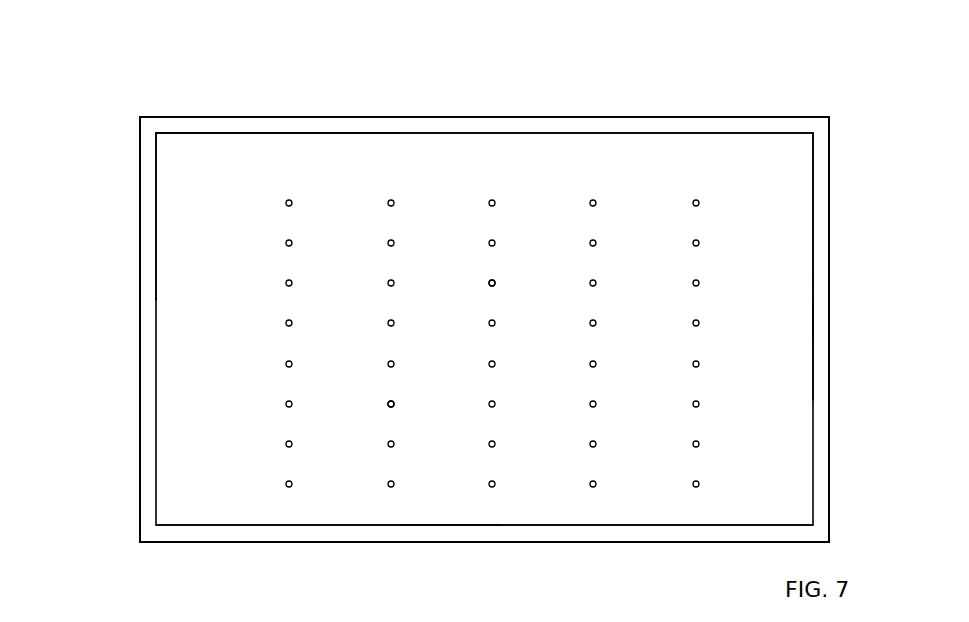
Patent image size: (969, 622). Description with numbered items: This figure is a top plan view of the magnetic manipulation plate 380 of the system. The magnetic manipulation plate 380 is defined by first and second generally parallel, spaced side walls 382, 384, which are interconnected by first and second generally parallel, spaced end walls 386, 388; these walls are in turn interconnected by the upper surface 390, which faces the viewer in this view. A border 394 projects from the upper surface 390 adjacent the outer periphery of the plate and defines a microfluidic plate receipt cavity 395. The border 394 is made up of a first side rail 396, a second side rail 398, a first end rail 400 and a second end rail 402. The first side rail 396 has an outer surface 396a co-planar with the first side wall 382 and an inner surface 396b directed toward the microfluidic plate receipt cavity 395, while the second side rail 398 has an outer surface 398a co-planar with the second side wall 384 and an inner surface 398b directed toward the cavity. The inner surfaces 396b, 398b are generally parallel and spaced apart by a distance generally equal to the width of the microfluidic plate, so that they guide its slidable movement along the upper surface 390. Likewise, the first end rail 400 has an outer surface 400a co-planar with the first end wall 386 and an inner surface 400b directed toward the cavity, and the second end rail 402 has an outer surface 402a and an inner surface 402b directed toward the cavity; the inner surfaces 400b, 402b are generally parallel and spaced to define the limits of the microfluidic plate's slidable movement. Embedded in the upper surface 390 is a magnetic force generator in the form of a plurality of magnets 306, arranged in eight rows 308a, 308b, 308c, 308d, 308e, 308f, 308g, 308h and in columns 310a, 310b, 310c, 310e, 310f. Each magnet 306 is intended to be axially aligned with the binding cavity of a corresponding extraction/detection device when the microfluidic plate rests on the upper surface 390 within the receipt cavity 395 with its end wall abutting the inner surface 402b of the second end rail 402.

The magnet 306 is at (494, 281).
The row of magnets 308a is at (274, 203).
The row of magnets 308b is at (274, 243).
The row of magnets 308c is at (274, 283).
The row of magnets 308d is at (274, 323).
The row of magnets 308e is at (274, 364).
The row of magnets 308f is at (274, 404).
The row of magnets 308g is at (274, 444).
The row of magnets 308h is at (274, 484).
The column of magnets 310a is at (290, 182).
The column of magnets 310b is at (391, 184).
The column of magnets 310c is at (492, 182).
The column of magnets 310e is at (593, 182).
The sixth column of apertures 310f is at (697, 182).
The magnetic manipulation plate 380 is at (125, 188).
The first side wall 382 is at (387, 117).
The second side wall 384 is at (450, 543).
The first end wall 386 is at (140, 318).
The second end wall 388 is at (830, 277).
The upper surface 390 is at (775, 252).
The border 394 is at (146, 396).
The microfluidic plate receipt cavity 395 is at (792, 181).
The first side rail 396 is at (567, 128).
The outer surface of first side rail 396a is at (452, 117).
The inner surface of first side rail 396b is at (248, 137).
The second side rail 398 is at (590, 534).
The outer surface of second side rail 398a is at (676, 542).
The inner surface of second side rail 398b is at (395, 522).
The first end rail 400 is at (146, 362).
The outer surface of first end rail 400a is at (134, 447).
The inner surface of first end rail 400b is at (155, 252).
The second end rail 402 is at (822, 357).
The outer surface of second end rail 402a is at (830, 412).
The inner surface of second end rail 402b is at (808, 323).